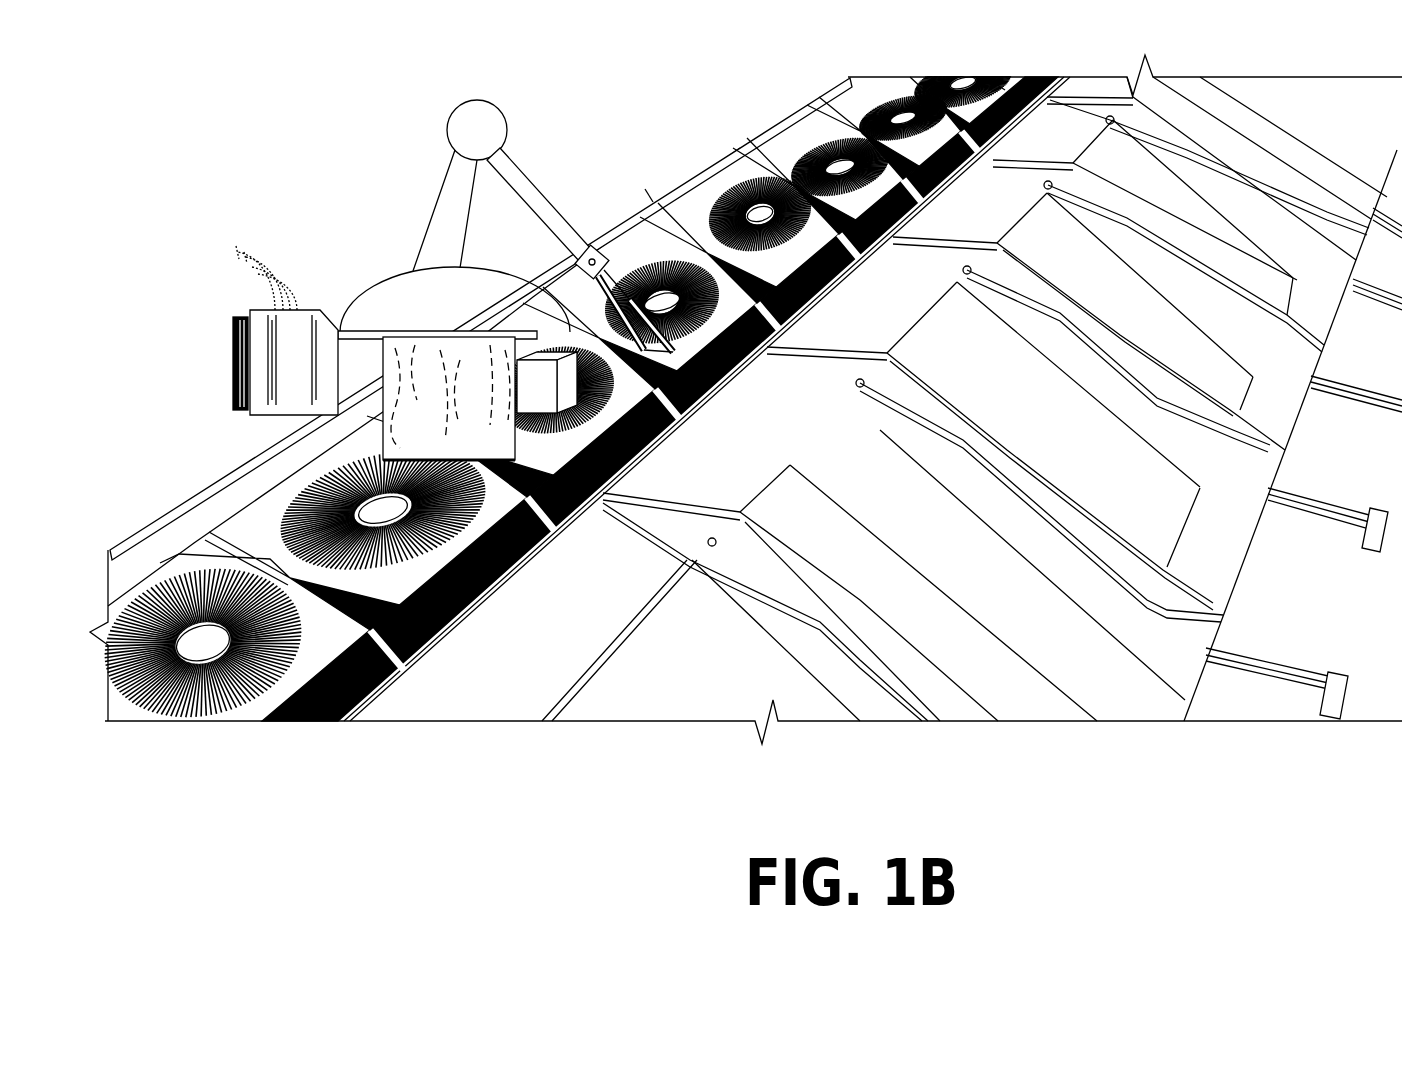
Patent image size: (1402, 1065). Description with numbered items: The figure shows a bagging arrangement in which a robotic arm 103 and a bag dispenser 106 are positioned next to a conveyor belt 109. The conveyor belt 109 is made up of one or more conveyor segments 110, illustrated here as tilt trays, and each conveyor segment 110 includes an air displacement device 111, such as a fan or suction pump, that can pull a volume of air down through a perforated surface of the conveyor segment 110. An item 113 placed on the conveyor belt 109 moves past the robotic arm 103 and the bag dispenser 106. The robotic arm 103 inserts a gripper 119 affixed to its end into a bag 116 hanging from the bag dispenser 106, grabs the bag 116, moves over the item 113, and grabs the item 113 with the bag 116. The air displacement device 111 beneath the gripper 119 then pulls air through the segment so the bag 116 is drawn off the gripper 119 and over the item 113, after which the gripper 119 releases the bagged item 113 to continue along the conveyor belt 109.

The robotic arm 103 is at (401, 252).
The bag dispenser 106 is at (280, 266).
The conveyor belt 109 is at (647, 197).
The conveyor segment 110 is at (835, 102).
The air displacement device 111 is at (797, 156).
The item 113 is at (553, 394).
The bag 116 is at (490, 424).
The gripper 119 is at (608, 268).